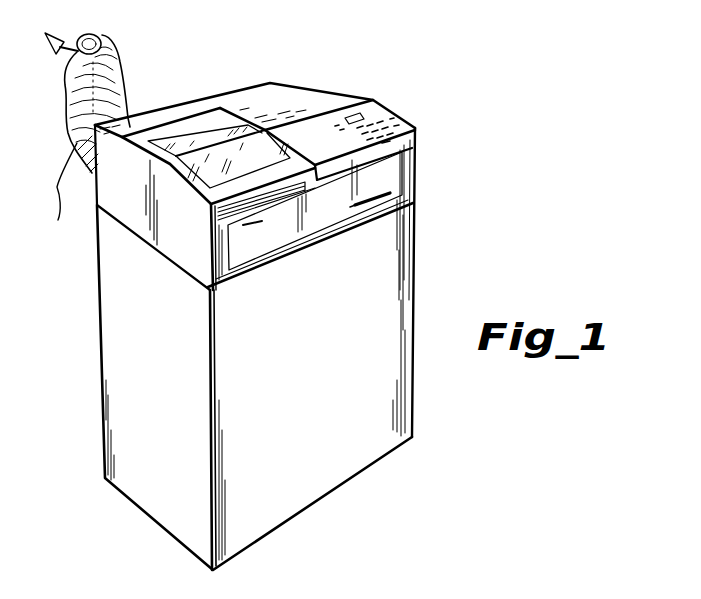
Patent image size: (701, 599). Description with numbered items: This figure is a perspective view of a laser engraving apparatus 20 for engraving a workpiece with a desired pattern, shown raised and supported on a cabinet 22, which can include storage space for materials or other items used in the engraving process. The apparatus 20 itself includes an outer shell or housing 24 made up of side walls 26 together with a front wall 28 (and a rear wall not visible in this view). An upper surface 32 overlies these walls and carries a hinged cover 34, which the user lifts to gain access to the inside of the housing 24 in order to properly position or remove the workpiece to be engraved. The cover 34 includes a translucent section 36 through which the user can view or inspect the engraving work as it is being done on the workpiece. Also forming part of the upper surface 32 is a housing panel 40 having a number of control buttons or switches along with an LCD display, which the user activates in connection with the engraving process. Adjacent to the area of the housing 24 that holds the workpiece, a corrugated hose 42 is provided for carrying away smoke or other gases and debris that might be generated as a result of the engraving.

The laser engraving apparatus 20 is at (273, 296).
The cabinet 22 is at (357, 380).
The housing 24 is at (414, 173).
The side walls 26 is at (175, 238).
The front wall 28 is at (377, 201).
The upper surface 32 is at (302, 97).
The hinged cover 34 is at (165, 128).
The translucent section 36 is at (215, 137).
The housing panel 40 is at (414, 134).
The corrugated hose 42 is at (86, 139).